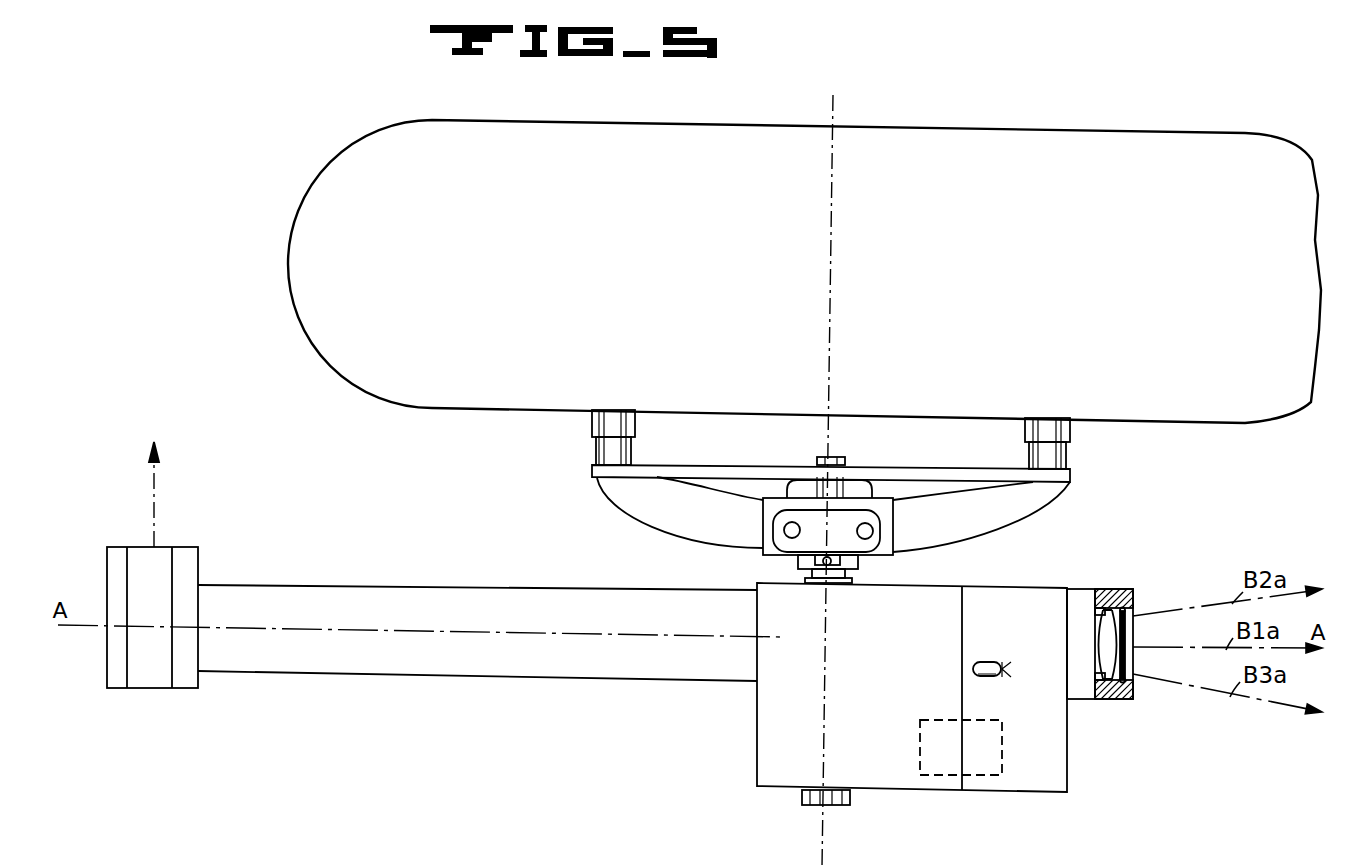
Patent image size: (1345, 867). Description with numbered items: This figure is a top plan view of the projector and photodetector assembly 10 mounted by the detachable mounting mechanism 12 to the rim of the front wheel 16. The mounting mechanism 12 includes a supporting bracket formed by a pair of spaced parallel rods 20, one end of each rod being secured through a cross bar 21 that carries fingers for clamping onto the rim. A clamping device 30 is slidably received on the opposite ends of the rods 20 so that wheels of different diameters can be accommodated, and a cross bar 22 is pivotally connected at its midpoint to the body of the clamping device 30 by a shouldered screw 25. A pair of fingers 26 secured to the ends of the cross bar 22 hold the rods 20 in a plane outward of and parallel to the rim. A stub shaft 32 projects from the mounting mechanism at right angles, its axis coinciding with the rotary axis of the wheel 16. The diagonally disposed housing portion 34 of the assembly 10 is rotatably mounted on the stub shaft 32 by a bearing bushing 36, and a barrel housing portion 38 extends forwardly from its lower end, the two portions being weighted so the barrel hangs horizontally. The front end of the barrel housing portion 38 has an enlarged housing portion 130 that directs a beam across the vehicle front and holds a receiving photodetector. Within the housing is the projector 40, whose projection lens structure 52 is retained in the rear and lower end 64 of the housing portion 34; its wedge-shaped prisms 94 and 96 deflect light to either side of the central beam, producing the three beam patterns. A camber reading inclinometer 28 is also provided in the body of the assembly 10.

The projector and photodetector assembly 10 is at (605, 701).
The detachable mounting mechanism 12 is at (822, 526).
The front wheel 16 is at (526, 250).
The spaced parallel rods 20 is at (784, 530).
The cross bar 21 is at (606, 486).
The cross bar 22 is at (912, 477).
The shouldered screw 25 is at (838, 457).
The fingers 26 is at (592, 428).
The camber reading inclinometer 28 is at (920, 722).
The clamping device 30 is at (790, 549).
The stub shaft 32 is at (812, 560).
The diagonally disposed housing portion 34 is at (762, 755).
The bearing bushing 36 is at (838, 583).
The barrel housing portion 38 is at (428, 589).
The projector 40 is at (1143, 602).
The projection lens structure 52 is at (1125, 627).
The rear and lower end of housing portion 64 is at (1130, 697).
The wedge-shaped prism 94 is at (1118, 612).
The wedge-shaped prism 96 is at (1113, 680).
The enlarged housing portion 130 is at (196, 558).